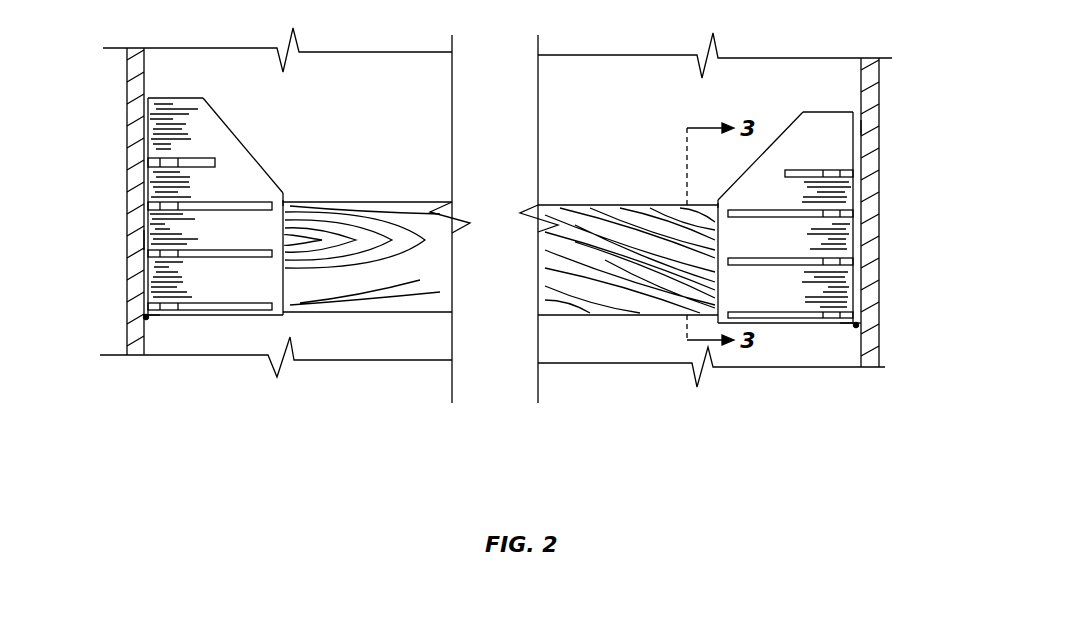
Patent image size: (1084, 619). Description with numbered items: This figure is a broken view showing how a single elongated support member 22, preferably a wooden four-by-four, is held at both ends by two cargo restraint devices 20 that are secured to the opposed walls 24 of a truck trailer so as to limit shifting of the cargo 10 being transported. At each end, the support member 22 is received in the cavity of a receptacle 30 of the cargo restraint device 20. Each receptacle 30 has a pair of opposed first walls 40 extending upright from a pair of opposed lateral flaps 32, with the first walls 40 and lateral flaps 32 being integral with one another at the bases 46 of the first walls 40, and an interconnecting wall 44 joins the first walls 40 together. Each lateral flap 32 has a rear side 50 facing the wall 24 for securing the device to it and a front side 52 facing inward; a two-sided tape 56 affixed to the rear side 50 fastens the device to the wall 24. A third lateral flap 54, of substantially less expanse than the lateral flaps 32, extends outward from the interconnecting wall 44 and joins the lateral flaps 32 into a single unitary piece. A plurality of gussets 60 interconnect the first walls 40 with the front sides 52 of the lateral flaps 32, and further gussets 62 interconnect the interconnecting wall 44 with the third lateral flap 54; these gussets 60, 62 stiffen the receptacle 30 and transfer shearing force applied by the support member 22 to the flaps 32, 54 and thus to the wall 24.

The cargo 10 is at (171, 95).
The cargo restraint device 20 is at (826, 106).
The support member 22 is at (385, 200).
The wall 24 is at (140, 347).
The receptacle 30 is at (283, 195).
The lateral flap 32 is at (142, 238).
The first wall 40 is at (258, 165).
The interconnecting wall 44 is at (233, 317).
The base 46 is at (850, 300).
The rear side 50 is at (140, 118).
The front side 52 is at (155, 145).
The third lateral flap 54 is at (146, 318).
The two-sided tape 56 is at (155, 193).
The gusset 60 is at (205, 158).
The gusset 62 is at (144, 315).